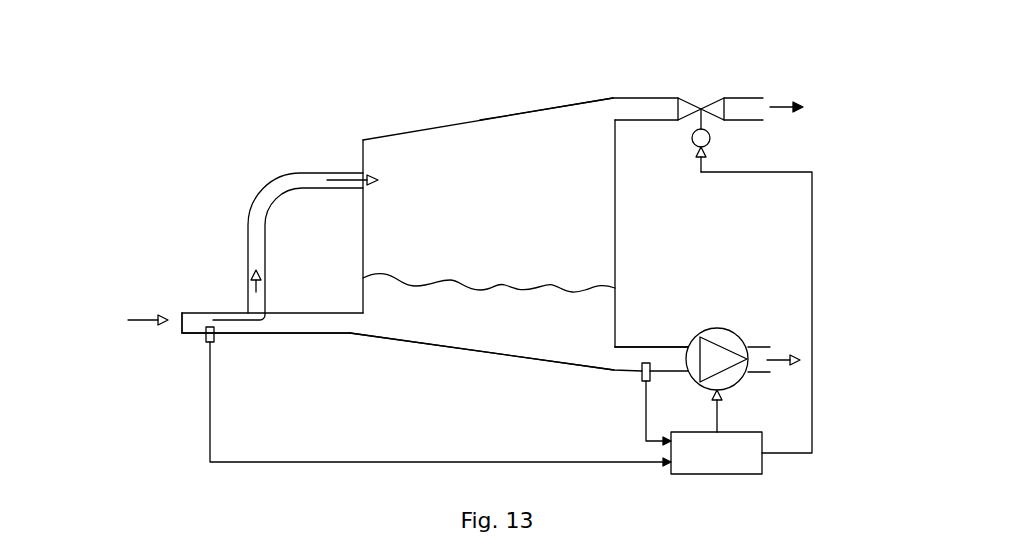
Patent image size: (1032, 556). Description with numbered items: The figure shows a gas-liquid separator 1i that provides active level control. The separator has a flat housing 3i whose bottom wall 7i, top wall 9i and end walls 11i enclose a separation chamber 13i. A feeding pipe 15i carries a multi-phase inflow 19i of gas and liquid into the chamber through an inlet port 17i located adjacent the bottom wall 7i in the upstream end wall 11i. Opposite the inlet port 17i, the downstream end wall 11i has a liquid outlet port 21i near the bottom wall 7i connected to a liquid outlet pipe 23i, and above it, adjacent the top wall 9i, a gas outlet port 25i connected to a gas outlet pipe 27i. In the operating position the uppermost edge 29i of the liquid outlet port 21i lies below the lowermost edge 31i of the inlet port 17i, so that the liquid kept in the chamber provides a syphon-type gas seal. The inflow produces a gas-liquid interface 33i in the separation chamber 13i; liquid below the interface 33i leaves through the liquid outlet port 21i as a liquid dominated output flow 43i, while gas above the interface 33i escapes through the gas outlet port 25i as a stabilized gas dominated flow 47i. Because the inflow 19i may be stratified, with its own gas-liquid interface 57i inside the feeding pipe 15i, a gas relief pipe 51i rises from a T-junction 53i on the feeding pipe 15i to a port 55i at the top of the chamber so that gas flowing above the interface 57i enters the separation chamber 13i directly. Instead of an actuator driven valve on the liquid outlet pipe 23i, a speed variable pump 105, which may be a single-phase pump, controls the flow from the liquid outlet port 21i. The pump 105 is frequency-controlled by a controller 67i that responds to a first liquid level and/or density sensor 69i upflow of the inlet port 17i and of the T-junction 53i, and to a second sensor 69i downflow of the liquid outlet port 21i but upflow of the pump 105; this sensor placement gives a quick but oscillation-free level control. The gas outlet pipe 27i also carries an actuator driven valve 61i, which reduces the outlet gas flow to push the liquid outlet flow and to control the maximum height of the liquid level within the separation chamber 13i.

The gas-liquid separator 1i is at (475, 105).
The housing 3i is at (530, 112).
The bottom wall 7i is at (480, 352).
The top wall 9i is at (558, 106).
The end walls 11i is at (388, 213).
The separation chamber 13i is at (408, 233).
The feeding pipe 15i is at (183, 336).
The inlet port 17i is at (358, 324).
The multi-phase inflow 19i is at (148, 313).
The liquid outlet port 21i is at (604, 364).
The liquid outlet pipe 23i is at (653, 345).
The gas outlet port 25i is at (612, 100).
The gas outlet pipe 27i is at (657, 97).
The uppermost edge of the liquid outlet port 29i is at (612, 340).
The lowermost edge of the inlet port 31i is at (358, 330).
The gas-liquid interface 33i is at (447, 278).
The liquid dominated output flow 43i is at (779, 362).
The gas dominated flow 47i is at (782, 105).
The gas relief pipe 51i is at (302, 171).
The T-junction 53i is at (243, 312).
The port 55i is at (378, 172).
The gas-liquid interface in the feeding pipe 57i is at (187, 312).
The actuator driven valve 61i is at (705, 106).
The controller 67i is at (684, 476).
The liquid level and/or density sensor 69i is at (216, 342).
The speed variable pump 105 is at (726, 329).